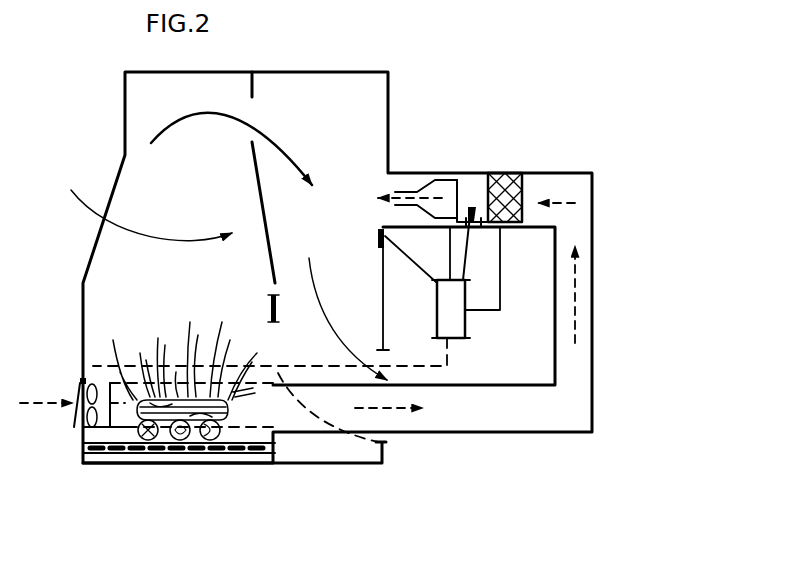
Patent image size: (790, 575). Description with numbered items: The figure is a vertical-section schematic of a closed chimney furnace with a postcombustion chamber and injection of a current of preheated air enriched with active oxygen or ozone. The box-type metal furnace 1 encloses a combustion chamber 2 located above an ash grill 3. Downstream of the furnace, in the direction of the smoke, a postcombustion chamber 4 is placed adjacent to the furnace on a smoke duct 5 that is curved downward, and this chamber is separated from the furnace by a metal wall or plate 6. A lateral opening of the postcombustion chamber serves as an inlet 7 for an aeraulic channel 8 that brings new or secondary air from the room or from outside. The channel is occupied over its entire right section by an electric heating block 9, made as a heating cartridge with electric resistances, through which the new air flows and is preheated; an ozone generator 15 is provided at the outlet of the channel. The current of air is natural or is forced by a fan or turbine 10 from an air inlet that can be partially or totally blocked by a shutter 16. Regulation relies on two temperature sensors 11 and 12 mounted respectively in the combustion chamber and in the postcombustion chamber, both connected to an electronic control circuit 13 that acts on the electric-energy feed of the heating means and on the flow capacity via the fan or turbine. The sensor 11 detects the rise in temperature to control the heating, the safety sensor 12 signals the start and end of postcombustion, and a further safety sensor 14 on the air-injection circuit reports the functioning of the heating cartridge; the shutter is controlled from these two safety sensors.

The metal furnace 1 is at (68, 325).
The combustion chamber 2 is at (108, 333).
The ash grill 3 is at (232, 454).
The postcombustion chamber 4 is at (340, 163).
The smoke duct 5 is at (362, 0).
The metal wall or plate 6 is at (146, 199).
The inlet 7 is at (395, 190).
The aeraulic channel 8 is at (598, 203).
The electric heating block 9 is at (522, 173).
The fan or turbine 10 is at (80, 440).
The temperature sensor 11 is at (260, 312).
The temperature sensor 12 is at (390, 235).
The electronic control circuit 13 is at (450, 323).
The safety sensor 14 is at (470, 210).
The ozone generator 15 is at (448, 190).
The shutter 16 is at (73, 384).